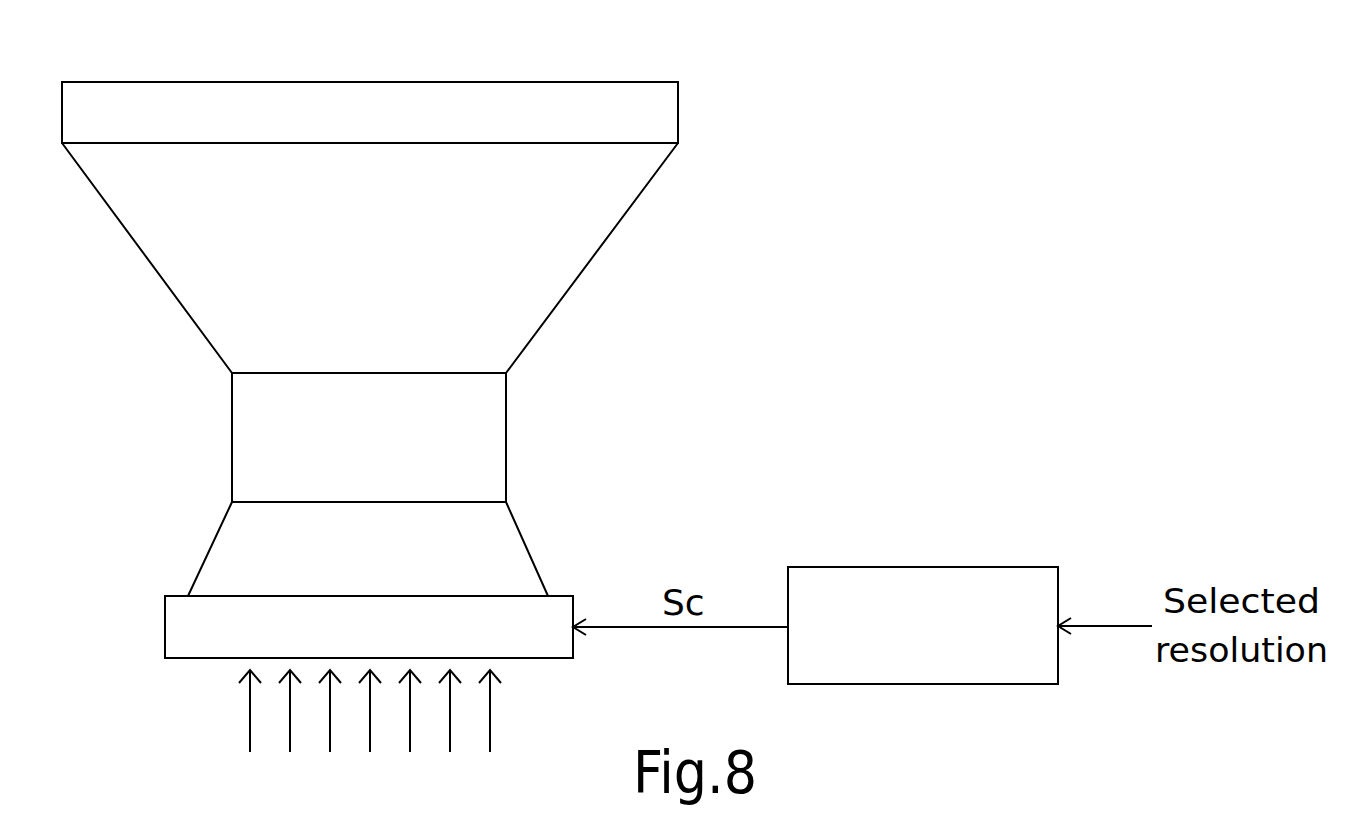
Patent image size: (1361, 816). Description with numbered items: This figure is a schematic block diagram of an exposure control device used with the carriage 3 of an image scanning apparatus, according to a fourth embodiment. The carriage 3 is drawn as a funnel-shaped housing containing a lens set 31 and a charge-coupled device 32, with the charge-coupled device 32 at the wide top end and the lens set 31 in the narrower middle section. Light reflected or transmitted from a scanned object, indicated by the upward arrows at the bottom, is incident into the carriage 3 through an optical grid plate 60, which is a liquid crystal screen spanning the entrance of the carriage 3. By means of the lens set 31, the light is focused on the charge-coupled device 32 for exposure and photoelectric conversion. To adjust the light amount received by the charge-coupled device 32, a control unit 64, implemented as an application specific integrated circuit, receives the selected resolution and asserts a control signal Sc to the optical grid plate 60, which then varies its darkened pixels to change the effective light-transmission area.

The carriage 3 is at (389, 347).
The lens set 31 is at (488, 447).
The charge-coupled device 32 is at (625, 100).
The optical grid plate 60 is at (512, 613).
The control unit 64 is at (1002, 585).